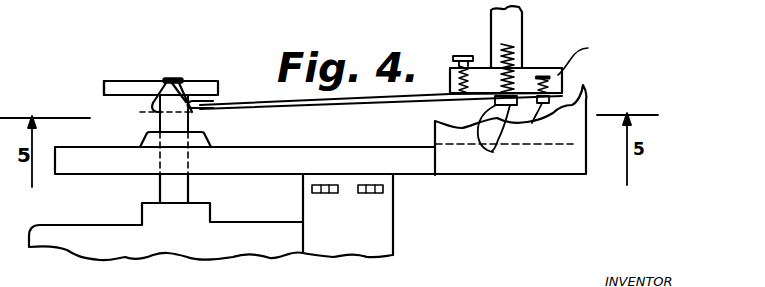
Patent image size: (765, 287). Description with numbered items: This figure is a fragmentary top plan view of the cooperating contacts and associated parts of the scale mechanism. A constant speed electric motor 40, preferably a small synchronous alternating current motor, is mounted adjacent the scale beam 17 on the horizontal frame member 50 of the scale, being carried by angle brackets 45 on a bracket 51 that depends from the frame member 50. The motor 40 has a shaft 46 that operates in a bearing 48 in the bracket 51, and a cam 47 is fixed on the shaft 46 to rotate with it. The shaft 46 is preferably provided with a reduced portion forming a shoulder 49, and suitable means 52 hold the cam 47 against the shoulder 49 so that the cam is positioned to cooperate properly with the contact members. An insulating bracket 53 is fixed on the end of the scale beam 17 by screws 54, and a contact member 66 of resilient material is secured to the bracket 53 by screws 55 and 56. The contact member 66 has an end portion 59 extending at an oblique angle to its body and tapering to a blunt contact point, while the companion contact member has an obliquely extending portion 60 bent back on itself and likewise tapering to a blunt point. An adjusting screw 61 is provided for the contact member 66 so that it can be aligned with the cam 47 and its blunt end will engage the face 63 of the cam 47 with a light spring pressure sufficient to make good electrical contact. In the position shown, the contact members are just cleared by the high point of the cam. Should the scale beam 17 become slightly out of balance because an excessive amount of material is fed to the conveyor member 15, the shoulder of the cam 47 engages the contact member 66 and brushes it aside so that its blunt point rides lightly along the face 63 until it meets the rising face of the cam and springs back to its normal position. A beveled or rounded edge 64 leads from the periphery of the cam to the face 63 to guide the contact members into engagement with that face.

The conveyor member 15 is at (164, 6).
The scale beam 17 is at (505, 27).
The constant speed electric motor 40 is at (127, 247).
The angle brackets 45 is at (368, 227).
The shaft 46 is at (178, 191).
The cam 47 is at (123, 90).
The bearing 48 is at (147, 136).
The shoulder 49 is at (201, 107).
The horizontal frame member 50 is at (569, 134).
The bracket 51 is at (294, 162).
The means for holding cam 52 is at (163, 80).
The insulating bracket 53 is at (533, 68).
The screws 54 is at (492, 151).
The screw 55 is at (479, 142).
The screw 56 is at (531, 122).
The end portion of contact member 59 is at (192, 86).
The obliquely extending portion 60 is at (156, 89).
The adjusting screw 61 is at (453, 56).
The face of cam 63 is at (131, 96).
The beveled or rounded edge 64 is at (105, 97).
The contact member 66 is at (303, 105).